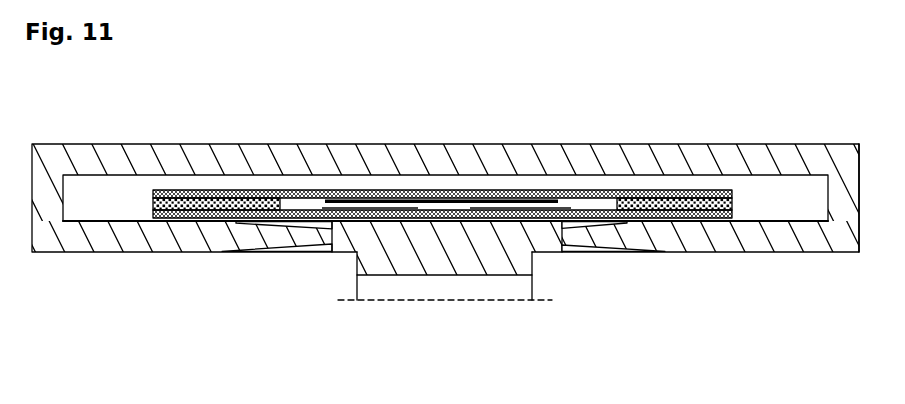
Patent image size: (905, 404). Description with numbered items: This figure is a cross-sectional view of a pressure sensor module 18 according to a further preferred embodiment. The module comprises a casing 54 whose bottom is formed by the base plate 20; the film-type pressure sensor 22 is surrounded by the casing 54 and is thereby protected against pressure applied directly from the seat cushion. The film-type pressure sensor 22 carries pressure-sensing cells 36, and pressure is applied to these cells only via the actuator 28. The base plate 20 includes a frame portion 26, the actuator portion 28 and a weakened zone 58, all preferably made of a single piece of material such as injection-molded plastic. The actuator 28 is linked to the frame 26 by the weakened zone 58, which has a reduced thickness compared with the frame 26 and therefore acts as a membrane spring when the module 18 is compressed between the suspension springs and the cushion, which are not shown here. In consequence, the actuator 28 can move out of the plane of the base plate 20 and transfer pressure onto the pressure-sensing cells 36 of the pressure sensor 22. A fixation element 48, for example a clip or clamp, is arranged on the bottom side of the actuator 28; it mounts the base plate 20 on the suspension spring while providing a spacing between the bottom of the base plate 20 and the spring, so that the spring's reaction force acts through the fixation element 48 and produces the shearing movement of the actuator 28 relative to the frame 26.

The pressure sensor module 18 is at (667, 116).
The base plate 20 is at (113, 221).
The film-type pressure sensor 22 is at (740, 204).
The pressure-sensing cells 36 is at (386, 180).
The casing 54 is at (857, 168).
The frame 26 is at (781, 253).
The actuator 28 is at (545, 253).
The weakened zone 58 is at (612, 253).
The fixation element 48 is at (357, 274).